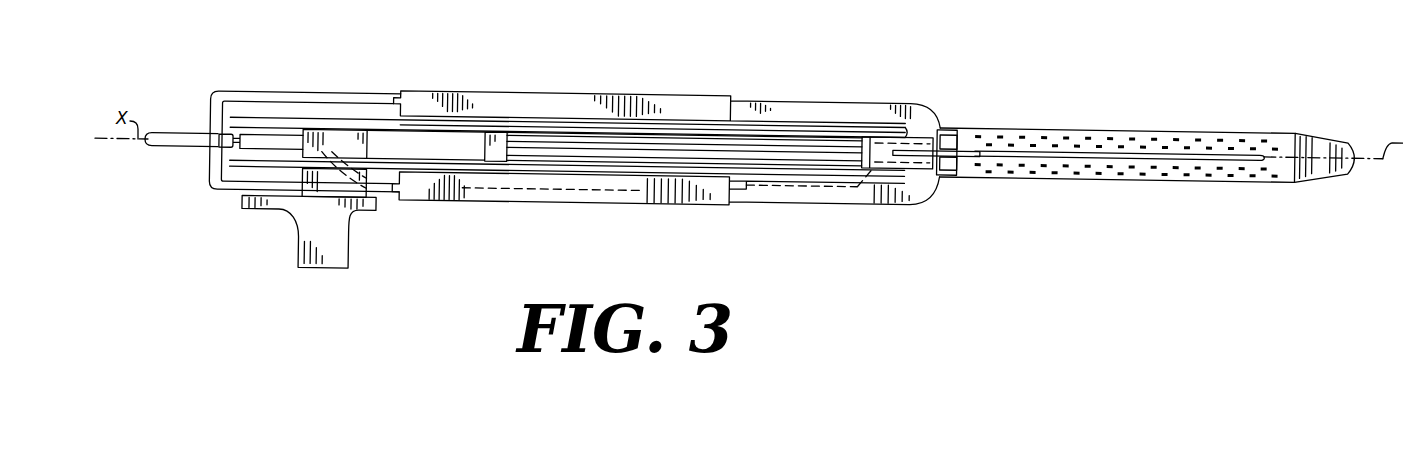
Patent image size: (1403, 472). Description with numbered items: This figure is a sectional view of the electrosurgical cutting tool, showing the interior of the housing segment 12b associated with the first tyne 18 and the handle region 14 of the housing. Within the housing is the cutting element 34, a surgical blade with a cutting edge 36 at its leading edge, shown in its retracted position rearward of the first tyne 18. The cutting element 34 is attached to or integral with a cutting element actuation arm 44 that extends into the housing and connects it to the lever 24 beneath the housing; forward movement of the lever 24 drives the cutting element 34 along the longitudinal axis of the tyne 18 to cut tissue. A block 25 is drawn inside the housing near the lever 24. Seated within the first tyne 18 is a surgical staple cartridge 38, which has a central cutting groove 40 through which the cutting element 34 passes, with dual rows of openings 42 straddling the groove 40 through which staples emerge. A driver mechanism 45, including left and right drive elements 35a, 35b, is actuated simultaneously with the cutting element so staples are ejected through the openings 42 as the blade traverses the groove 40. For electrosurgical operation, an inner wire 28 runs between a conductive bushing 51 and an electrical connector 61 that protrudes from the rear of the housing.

The housing segment 12b is at (258, 85).
The electrical connector 61 is at (168, 148).
The handle region 14 is at (672, 93).
The slide block 25 is at (343, 145).
The lever 24 is at (342, 250).
The cutting element actuation arm 44 is at (560, 150).
The driver mechanism 45 is at (803, 140).
The inner wire 28 is at (643, 200).
The conductive bushing 51 is at (880, 170).
The cutting edge 36 is at (960, 150).
The cutting element 34 is at (933, 167).
The left drive element 35a is at (953, 150).
The right drive element 35b is at (953, 162).
The first tyne 18 is at (1193, 193).
The surgical staple cartridge 38 is at (1283, 170).
The central cutting groove 40 is at (1193, 157).
The openings 42 is at (1073, 138).